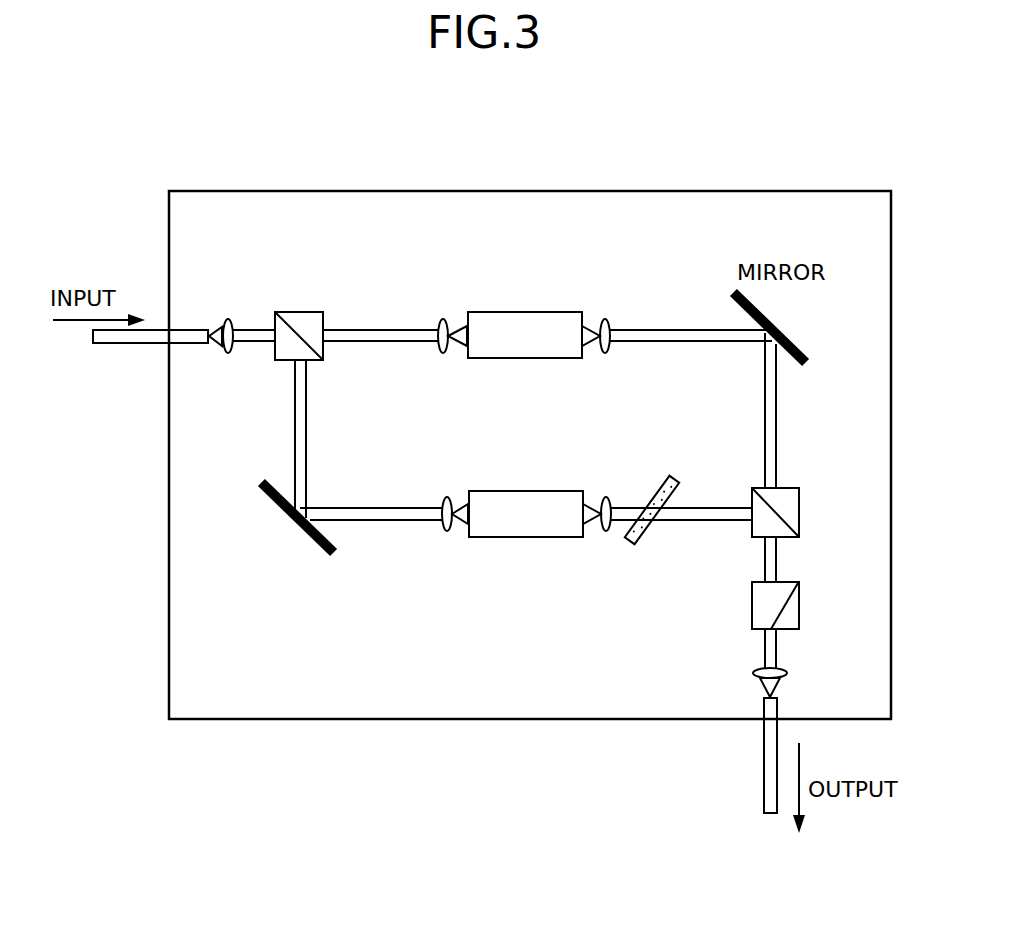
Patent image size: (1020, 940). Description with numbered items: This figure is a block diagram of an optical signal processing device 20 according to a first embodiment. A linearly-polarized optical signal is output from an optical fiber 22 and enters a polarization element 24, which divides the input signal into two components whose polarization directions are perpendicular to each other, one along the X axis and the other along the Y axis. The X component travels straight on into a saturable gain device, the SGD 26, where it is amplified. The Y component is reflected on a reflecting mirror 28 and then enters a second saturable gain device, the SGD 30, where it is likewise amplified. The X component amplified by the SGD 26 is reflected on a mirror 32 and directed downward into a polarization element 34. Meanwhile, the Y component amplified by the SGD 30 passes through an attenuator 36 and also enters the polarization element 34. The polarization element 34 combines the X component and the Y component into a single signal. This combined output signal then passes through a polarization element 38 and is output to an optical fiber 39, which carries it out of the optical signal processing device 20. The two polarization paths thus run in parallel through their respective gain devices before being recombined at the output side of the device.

The optical signal processing device 20 is at (503, 190).
The optical fiber 22 is at (134, 344).
The polarization element 24 is at (308, 311).
The saturable gain device (SGD) 26 is at (525, 312).
The reflecting mirror 28 is at (270, 500).
The SGD 30 is at (525, 491).
The mirror 32 is at (792, 337).
The polarization element 34 is at (786, 488).
The attenuator 36 is at (674, 480).
The polarization element 38 is at (786, 582).
The optical fiber 39 is at (764, 768).